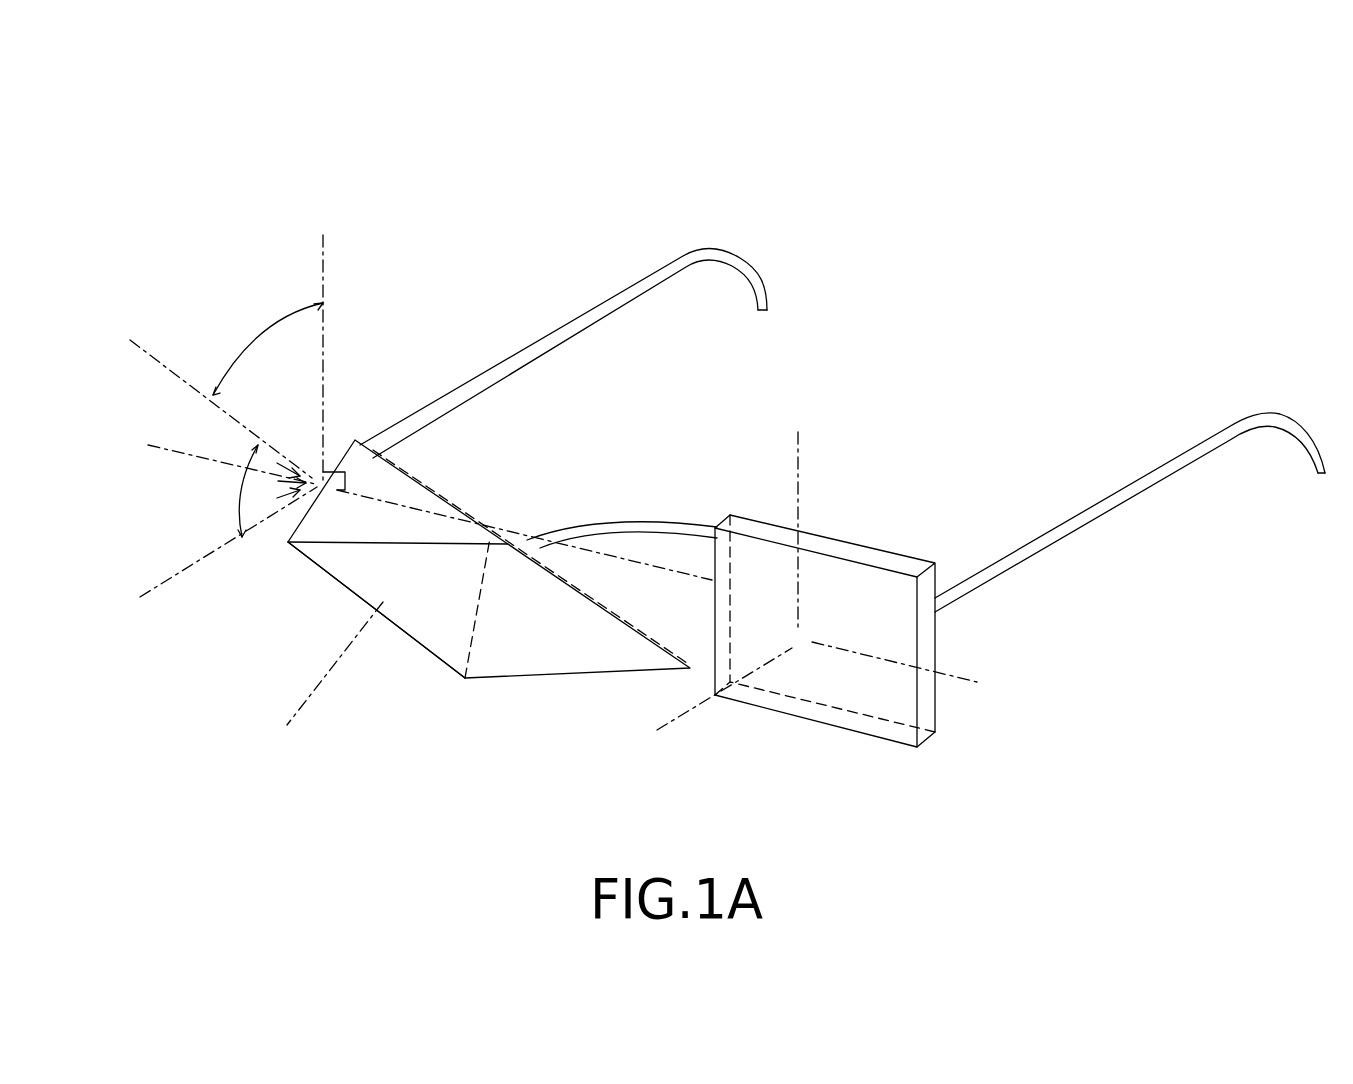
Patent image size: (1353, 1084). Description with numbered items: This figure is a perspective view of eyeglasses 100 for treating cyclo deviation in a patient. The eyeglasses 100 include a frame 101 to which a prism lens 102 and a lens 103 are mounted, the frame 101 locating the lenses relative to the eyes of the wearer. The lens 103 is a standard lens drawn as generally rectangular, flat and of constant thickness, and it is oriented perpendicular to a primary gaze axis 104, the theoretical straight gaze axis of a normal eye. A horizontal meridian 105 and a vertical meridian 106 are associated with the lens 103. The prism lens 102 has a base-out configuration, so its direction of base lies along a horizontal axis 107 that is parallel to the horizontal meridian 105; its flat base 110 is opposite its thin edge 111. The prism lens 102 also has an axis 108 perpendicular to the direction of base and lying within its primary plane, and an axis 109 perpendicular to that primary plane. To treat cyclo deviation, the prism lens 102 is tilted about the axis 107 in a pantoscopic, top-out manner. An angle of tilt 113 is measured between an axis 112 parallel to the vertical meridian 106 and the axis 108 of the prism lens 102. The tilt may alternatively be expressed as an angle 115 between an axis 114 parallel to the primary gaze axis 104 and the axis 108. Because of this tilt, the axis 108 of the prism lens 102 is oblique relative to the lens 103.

The eyeglasses 100 is at (268, 195).
The frame 101 is at (698, 250).
The prism lens 102 is at (453, 490).
The lens 103 is at (826, 552).
The primary gaze axis 104 is at (672, 718).
The horizontal meridian 105 is at (962, 675).
The vertical meridian 106 is at (798, 445).
The axis 107 is at (178, 453).
The axis 108 is at (160, 362).
The axis 109 is at (320, 683).
The base 110 is at (288, 542).
The thin edge 111 is at (560, 563).
The axis 112 is at (323, 262).
The angle of tilt 113 is at (258, 338).
The axis 114 is at (153, 587).
The angle 115 is at (243, 493).